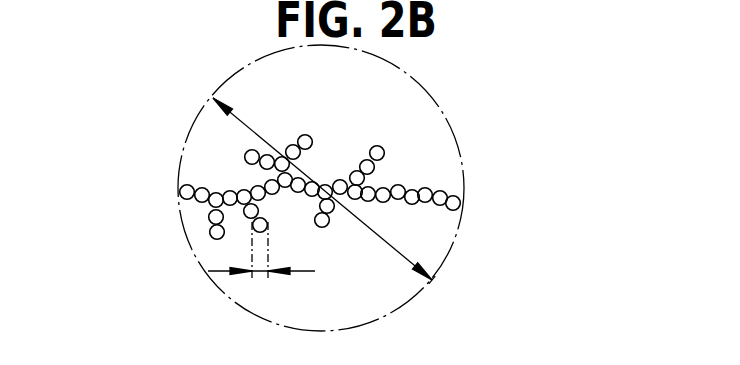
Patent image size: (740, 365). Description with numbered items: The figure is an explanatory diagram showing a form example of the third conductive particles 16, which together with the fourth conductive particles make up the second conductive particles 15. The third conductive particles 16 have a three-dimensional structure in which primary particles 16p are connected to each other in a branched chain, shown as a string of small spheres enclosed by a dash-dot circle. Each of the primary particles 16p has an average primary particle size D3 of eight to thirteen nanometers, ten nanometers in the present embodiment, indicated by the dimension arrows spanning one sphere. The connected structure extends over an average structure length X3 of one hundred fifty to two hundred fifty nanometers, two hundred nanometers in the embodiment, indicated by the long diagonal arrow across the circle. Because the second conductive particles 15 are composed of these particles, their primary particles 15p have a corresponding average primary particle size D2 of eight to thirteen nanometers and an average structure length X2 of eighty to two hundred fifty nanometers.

The third conductive particles 16 is at (346, 188).
The second conductive particles 15 is at (346, 188).
The primary particles 16p is at (259, 200).
The primary particles 15p is at (212, 233).
The average structure length X3 is at (387, 191).
The average structure length X2 is at (383, 257).
The average primary particle size D3 is at (215, 282).
The average primary particle size D2 is at (257, 277).